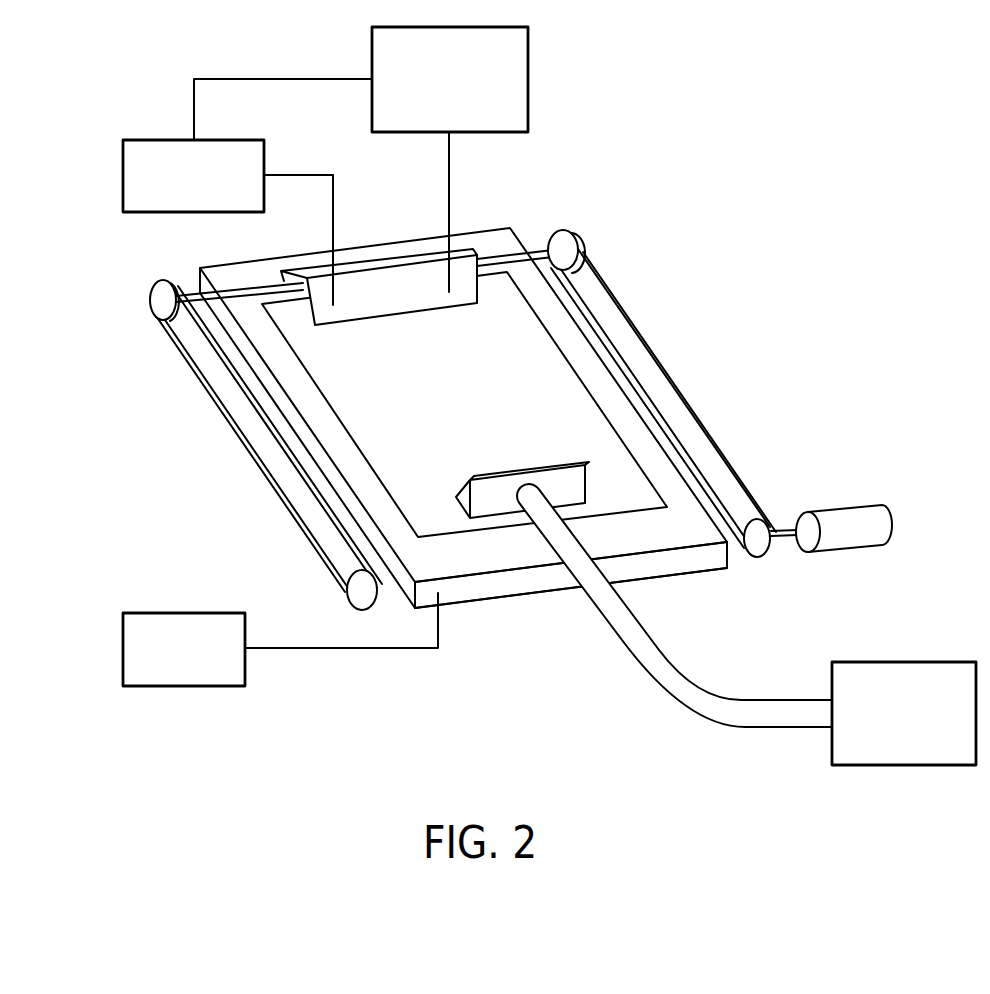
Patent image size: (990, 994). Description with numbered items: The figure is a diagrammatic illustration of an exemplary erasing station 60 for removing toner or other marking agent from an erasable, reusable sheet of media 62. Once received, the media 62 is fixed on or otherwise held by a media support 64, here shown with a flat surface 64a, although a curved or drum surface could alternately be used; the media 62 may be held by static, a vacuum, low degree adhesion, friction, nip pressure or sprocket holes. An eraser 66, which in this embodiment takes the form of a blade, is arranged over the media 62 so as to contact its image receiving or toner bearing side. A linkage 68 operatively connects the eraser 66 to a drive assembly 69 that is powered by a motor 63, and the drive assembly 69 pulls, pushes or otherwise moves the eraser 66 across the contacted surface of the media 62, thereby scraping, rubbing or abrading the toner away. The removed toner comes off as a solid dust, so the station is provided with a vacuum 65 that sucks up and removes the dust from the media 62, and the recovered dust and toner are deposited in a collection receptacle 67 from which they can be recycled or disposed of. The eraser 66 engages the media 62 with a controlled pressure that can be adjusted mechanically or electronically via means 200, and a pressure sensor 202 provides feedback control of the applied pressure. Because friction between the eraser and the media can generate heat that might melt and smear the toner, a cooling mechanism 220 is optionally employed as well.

The erasing station 60 is at (782, 262).
The erasable/reusable sheet of media 62 is at (462, 391).
The motor 63 is at (855, 552).
The media support 64 is at (497, 591).
The flat surface 64a is at (648, 563).
The vacuum 65 is at (528, 477).
The eraser 66 is at (392, 270).
The collection receptacle 67 is at (909, 661).
The linkage 68 is at (232, 290).
The drive assembly 69 is at (270, 448).
The pressure adjusting means 200 is at (530, 80).
The pressure sensor 202 is at (123, 168).
The cooling mechanism 220 is at (183, 687).